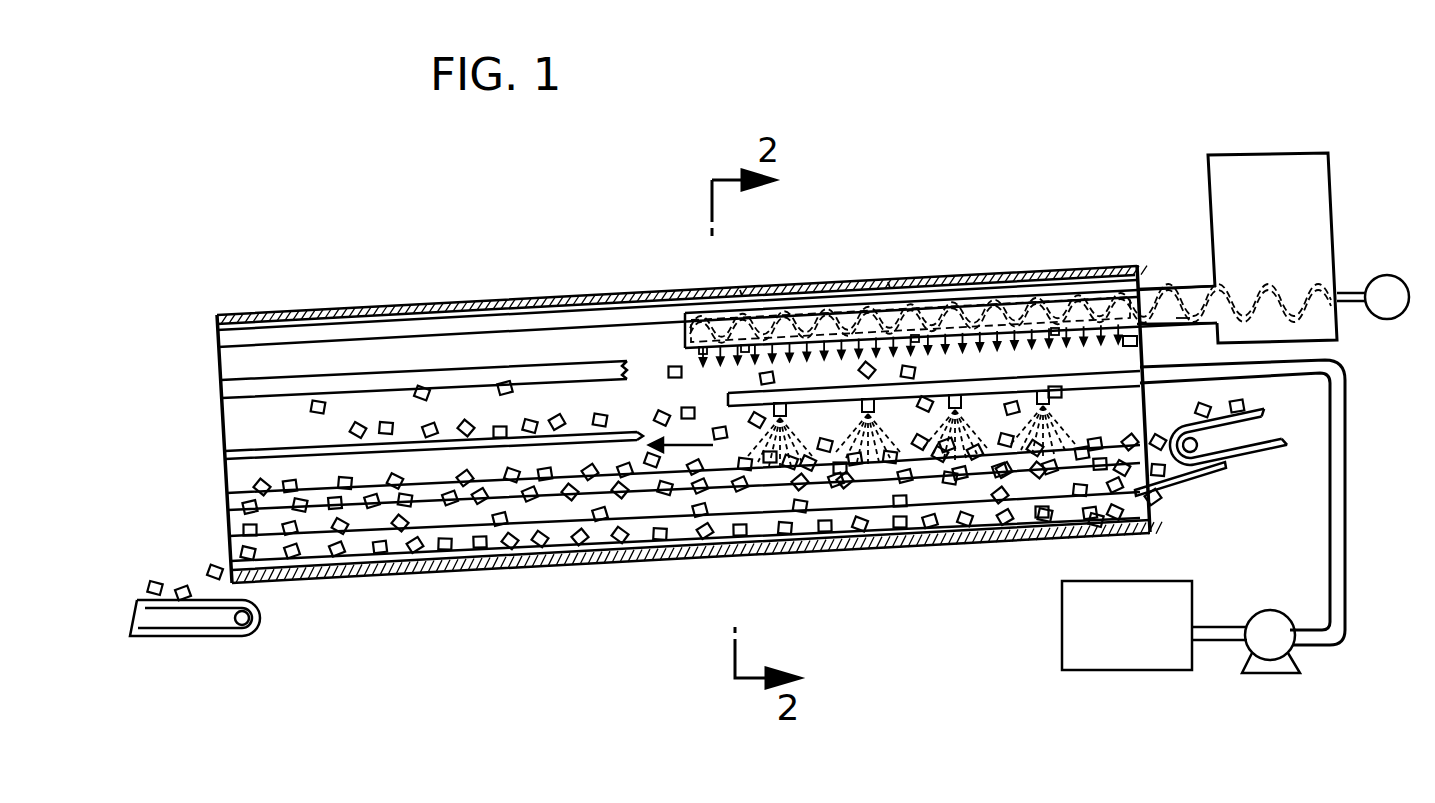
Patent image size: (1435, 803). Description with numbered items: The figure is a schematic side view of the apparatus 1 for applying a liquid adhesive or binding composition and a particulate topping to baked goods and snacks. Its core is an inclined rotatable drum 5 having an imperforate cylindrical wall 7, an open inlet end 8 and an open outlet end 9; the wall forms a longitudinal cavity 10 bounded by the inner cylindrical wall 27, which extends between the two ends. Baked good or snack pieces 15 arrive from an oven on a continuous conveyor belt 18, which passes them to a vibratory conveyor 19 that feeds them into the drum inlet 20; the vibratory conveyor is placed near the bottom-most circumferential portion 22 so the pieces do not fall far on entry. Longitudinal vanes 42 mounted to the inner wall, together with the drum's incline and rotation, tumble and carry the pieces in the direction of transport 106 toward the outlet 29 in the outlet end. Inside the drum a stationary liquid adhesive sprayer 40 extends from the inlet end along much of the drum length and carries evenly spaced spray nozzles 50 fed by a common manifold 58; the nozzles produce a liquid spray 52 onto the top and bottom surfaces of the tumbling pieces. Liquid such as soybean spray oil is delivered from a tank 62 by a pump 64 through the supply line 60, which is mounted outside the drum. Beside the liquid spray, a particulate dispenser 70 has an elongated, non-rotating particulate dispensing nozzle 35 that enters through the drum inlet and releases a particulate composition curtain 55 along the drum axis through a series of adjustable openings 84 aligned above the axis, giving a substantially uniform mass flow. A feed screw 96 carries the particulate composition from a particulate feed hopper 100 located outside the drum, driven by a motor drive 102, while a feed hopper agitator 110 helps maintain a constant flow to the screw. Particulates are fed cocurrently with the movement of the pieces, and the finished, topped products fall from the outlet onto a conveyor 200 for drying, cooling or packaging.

The apparatus 1 is at (450, 201).
The inclined rotatable drum 5 is at (517, 299).
The cylindrical wall 7 is at (313, 311).
The open inlet end 8 is at (1150, 345).
The open outlet end 9 is at (218, 420).
The longitudinal cavity 10 is at (638, 350).
The baked good or snack pieces 15 is at (1247, 402).
The continuous conveyor belt 18 is at (1260, 453).
The vibratory conveyor 19 is at (1190, 478).
The drum inlet 20 is at (1150, 505).
The bottom-most circumferential portion 22 is at (1085, 525).
The inner cylindrical wall 27 is at (217, 338).
The outlet 29 is at (230, 555).
The particulate dispensing nozzle 35 is at (868, 399).
The liquid adhesive sprayer 40 is at (1049, 391).
The longitudinal vanes 42 is at (219, 395).
The spray nozzles 50 is at (786, 403).
The liquid spray 52 is at (781, 456).
The particulate composition curtain 55 is at (701, 352).
The manifold 58 is at (928, 384).
The supply line 60 is at (1345, 478).
The tank 62 is at (1080, 630).
The pump 64 is at (1252, 647).
The particulate dispenser 70 is at (1206, 158).
The adjustable openings 84 is at (760, 288).
The feed screw 96 is at (1183, 318).
The particulate feed hopper 100 is at (1318, 160).
The motor drive 102 is at (1387, 275).
The direction of transport 106 is at (675, 449).
The feed hopper agitator 110 is at (1290, 290).
The conveyor 200 is at (143, 600).